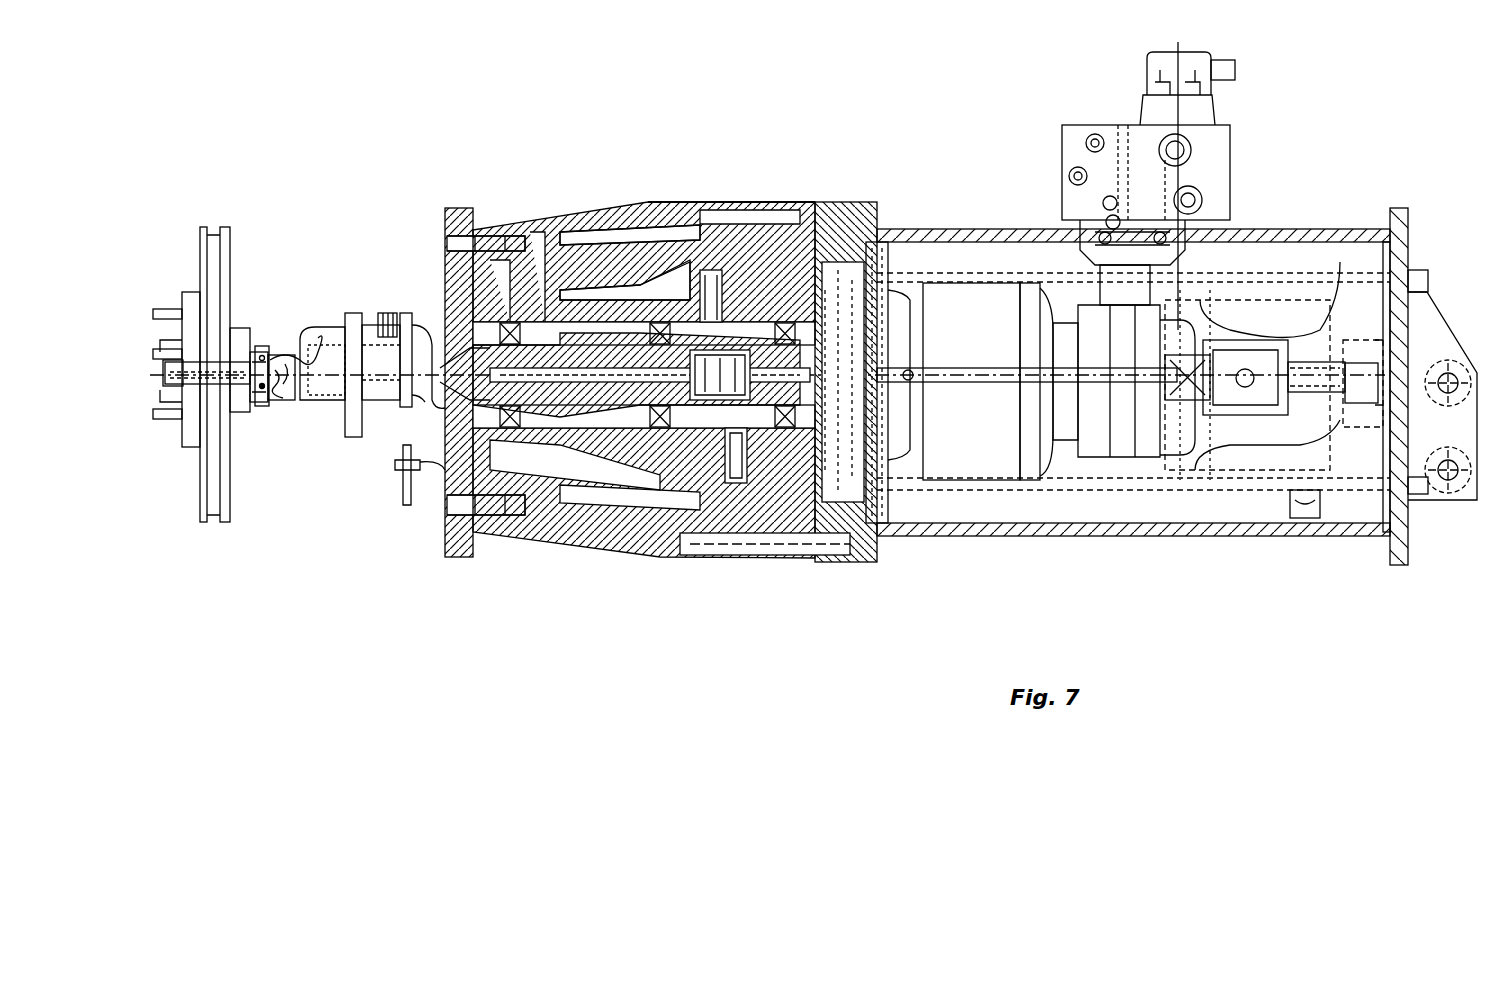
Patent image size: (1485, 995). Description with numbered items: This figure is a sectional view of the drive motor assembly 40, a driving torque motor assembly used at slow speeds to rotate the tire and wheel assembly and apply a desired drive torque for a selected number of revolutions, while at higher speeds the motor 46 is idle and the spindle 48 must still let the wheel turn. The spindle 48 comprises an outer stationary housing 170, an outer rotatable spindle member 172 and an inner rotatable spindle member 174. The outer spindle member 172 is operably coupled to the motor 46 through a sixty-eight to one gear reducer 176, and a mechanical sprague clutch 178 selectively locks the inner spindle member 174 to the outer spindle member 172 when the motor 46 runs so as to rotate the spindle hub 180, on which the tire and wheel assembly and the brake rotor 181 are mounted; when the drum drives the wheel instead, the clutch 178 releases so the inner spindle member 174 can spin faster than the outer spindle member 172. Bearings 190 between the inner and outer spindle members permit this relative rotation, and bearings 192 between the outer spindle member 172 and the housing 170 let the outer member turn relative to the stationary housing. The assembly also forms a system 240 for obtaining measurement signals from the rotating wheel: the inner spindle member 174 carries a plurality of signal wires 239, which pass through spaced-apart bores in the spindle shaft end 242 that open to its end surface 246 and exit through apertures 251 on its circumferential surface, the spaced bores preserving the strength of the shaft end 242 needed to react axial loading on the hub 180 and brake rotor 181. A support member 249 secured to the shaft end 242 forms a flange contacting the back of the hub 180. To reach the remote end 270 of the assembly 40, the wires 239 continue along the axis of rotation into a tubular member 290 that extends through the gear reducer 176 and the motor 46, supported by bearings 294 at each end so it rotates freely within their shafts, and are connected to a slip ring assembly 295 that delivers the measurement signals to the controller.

The drive motor assembly 40 is at (932, 134).
The motor 46 is at (1163, 300).
The spindle 48 is at (751, 190).
The outer stationary housing 170 is at (775, 201).
The outer rotatable spindle member 172 is at (633, 300).
The inner rotatable spindle member 174 is at (585, 322).
The gear reducer 176 is at (980, 428).
The clutch 178 is at (710, 270).
The spindle hub 180 is at (181, 292).
The brake rotor 181 is at (203, 227).
The bearings 190 is at (660, 428).
The bearings 192 is at (508, 322).
The signal wires 239 is at (323, 327).
The system 240 is at (403, 275).
The spindle shaft end 242 is at (252, 402).
The end surface 246 is at (165, 388).
The support member 249 is at (268, 395).
The apertures 251 is at (277, 352).
The remote end 270 is at (1255, 335).
The tubular member 290 is at (1036, 390).
The bearings 294 is at (737, 440).
The slip ring assembly 295 is at (1290, 470).